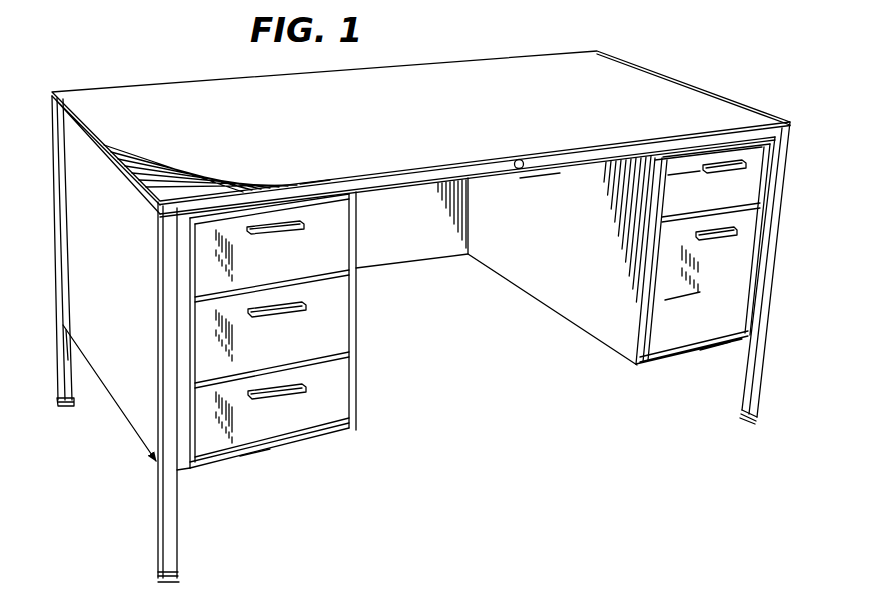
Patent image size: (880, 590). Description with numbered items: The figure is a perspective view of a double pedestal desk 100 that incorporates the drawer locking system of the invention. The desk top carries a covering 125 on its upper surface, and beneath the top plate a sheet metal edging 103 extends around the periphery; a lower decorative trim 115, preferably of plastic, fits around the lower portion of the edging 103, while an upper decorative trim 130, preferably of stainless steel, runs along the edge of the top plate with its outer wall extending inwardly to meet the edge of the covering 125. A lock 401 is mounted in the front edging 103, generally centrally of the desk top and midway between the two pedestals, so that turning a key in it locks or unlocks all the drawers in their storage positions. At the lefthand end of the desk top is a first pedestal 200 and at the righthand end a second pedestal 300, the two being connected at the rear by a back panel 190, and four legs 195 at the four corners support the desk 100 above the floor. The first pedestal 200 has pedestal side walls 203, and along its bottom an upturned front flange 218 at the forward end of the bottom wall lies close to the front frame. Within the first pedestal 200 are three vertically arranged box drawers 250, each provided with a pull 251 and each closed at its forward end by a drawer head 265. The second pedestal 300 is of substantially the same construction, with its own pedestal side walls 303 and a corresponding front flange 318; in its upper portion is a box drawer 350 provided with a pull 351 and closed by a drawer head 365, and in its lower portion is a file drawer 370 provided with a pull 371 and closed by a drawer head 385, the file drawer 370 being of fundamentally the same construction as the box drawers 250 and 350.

The double pedestal desk 100 is at (114, 74).
The covering 125 is at (250, 125).
The edging 103 is at (434, 176).
The lock 401 is at (508, 160).
The upper decorative trim 130 is at (565, 155).
The lower decorative trim 115 is at (553, 169).
The legs 195 is at (759, 368).
The pedestal side walls 203 is at (124, 304).
The pedestal side walls 303 is at (591, 274).
The back panel 190 is at (428, 252).
The first pedestal 200 is at (302, 450).
The front flange 218 is at (244, 455).
The drawer head 265 is at (190, 415).
The box drawers 250 is at (328, 256).
The pull 251 is at (322, 226).
The second pedestal 300 is at (678, 358).
The front flange 318 is at (725, 346).
The drawer head 385 is at (706, 332).
The drawer head 365 is at (730, 196).
The box drawer 350 is at (752, 182).
The pull 351 is at (730, 164).
The pull 371 is at (724, 240).
The file drawer 370 is at (738, 287).